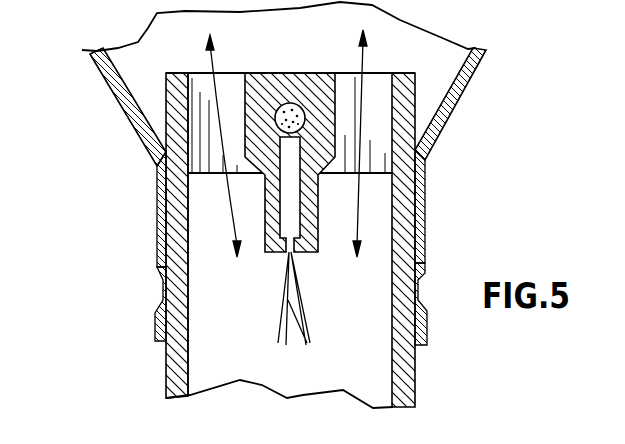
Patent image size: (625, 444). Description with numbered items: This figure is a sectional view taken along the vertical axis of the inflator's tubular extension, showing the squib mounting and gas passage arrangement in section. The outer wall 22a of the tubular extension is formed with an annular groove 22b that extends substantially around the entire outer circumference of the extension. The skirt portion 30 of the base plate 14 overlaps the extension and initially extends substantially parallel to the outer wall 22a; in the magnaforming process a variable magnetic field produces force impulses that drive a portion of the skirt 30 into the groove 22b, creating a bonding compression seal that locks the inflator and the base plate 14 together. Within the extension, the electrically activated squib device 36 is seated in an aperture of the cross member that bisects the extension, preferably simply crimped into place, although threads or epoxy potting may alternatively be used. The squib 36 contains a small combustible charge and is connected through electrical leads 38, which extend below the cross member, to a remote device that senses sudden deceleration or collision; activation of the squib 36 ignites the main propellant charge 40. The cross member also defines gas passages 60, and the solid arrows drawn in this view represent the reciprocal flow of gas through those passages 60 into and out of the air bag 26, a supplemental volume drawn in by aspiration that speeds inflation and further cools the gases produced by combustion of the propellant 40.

The base plate 14 is at (110, 85).
The air bag 26 is at (150, 138).
The skirt portion 30 is at (163, 268).
The outer wall 22a is at (173, 377).
The annular groove 22b is at (168, 283).
The squib device 36 is at (290, 200).
The electrical leads 38 is at (288, 322).
The main propellant charge 40 is at (293, 104).
The gas passages 60 is at (205, 82).